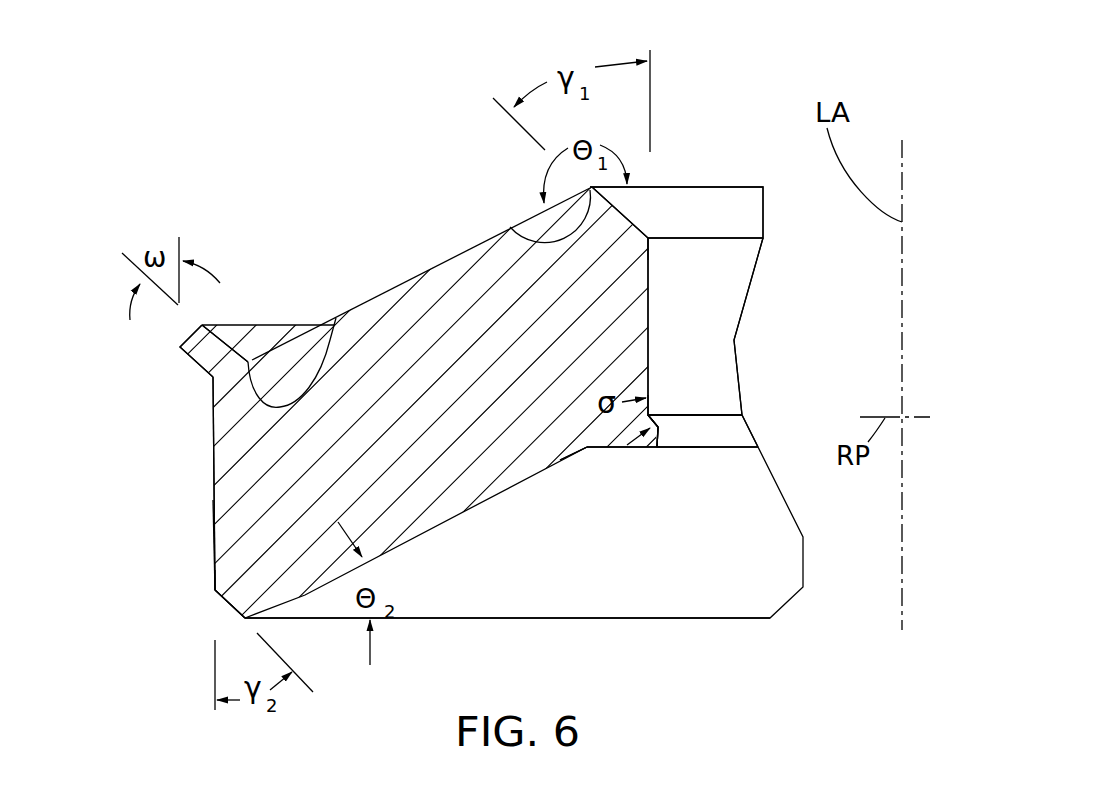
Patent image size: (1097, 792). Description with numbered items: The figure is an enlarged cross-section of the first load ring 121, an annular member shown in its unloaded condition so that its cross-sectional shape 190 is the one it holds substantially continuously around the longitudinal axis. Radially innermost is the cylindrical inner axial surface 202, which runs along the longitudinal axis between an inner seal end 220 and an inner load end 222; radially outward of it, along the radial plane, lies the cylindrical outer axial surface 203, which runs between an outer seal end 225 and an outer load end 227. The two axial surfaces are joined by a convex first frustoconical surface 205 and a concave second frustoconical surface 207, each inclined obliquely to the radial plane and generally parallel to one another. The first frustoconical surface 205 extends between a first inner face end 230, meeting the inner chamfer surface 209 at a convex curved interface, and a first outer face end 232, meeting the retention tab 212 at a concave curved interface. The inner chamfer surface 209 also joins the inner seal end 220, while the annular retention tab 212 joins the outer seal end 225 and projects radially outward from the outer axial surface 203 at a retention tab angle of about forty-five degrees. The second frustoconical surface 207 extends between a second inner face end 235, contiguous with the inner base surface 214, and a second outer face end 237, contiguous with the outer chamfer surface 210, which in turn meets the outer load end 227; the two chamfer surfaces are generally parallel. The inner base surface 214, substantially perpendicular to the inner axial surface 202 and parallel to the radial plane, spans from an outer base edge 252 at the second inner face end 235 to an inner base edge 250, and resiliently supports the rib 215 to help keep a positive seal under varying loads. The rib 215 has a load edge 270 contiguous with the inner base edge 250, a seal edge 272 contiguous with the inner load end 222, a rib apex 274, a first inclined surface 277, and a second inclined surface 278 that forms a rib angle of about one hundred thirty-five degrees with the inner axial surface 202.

The first load ring 121 is at (290, 177).
The cross-sectional shape 190 is at (213, 532).
The inner axial surface 202 is at (705, 326).
The outer axial surface 203 is at (212, 457).
The first frustoconical surface 205 is at (437, 263).
The second frustoconical surface 207 is at (404, 547).
The inner chamfer surface 209 is at (676, 212).
The outer chamfer surface 210 is at (223, 607).
The retention tab 212 is at (220, 340).
The inner base surface 214 is at (622, 449).
The rib 215 is at (720, 432).
The inner seal end 220 is at (650, 240).
The inner load end 222 is at (650, 415).
The outer seal end 225 is at (214, 378).
The outer load end 227 is at (213, 592).
The first inner face end 230 is at (510, 227).
The first outer face end 232 is at (334, 330).
The second inner face end 235 is at (588, 447).
The second outer face end 237 is at (250, 622).
The inner base edge 250 is at (651, 425).
The outer base edge 252 is at (588, 447).
The load edge 270 is at (651, 425).
The seal edge 272 is at (680, 417).
The rib apex 274 is at (690, 447).
The first inclined surface 277 is at (658, 427).
The second inclined surface 278 is at (690, 415).